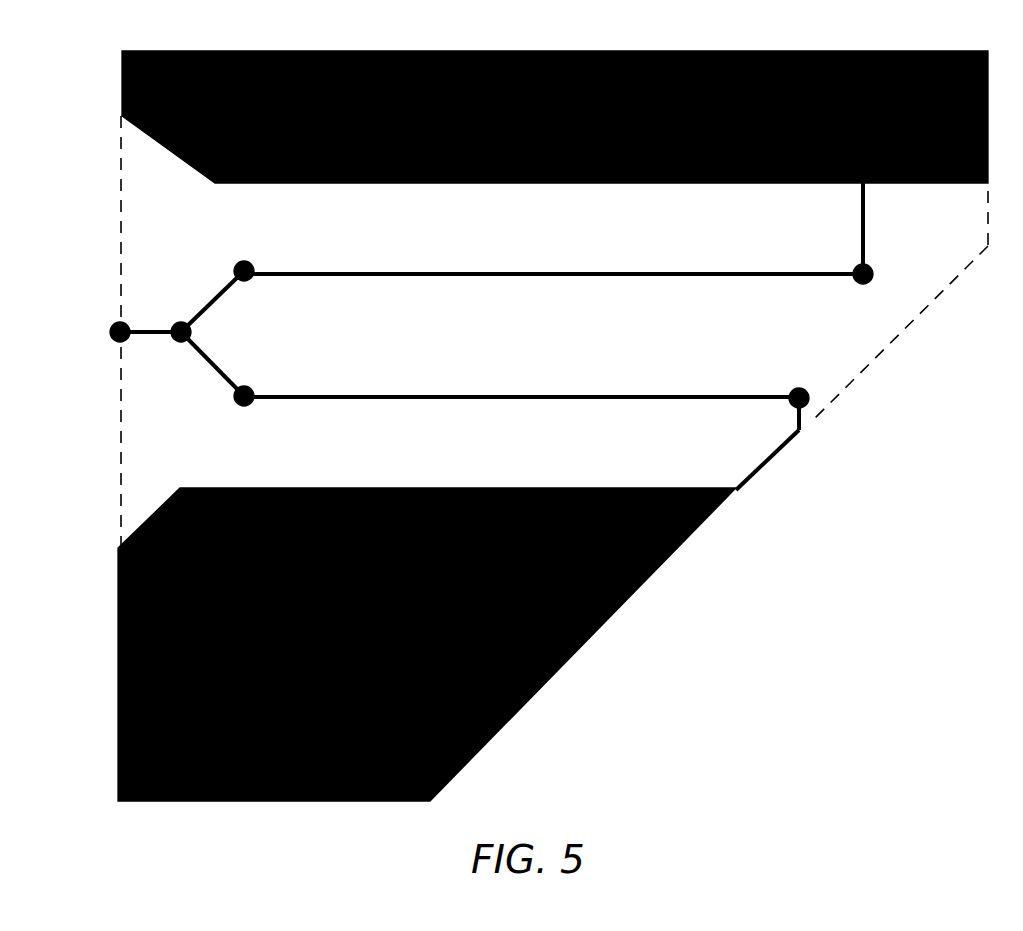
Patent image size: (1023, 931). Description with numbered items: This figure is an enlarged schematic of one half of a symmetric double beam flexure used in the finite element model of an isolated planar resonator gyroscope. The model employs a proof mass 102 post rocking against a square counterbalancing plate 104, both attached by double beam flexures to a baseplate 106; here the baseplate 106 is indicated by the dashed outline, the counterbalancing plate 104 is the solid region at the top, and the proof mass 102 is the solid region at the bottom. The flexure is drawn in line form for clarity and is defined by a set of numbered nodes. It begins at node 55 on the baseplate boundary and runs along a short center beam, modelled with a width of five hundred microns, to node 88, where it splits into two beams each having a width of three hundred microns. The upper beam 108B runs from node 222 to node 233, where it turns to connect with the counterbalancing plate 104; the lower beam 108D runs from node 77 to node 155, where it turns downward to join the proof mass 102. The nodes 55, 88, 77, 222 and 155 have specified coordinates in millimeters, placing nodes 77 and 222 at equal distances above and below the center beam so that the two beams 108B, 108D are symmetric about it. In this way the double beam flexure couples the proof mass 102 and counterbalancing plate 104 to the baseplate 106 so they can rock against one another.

The proof mass 102 is at (587, 626).
The counterbalancing plate 104 is at (745, 45).
The baseplate 106 is at (138, 219).
The double beam flexure beam 108B is at (608, 264).
The double beam flexure beam 108D is at (607, 387).
The node 55 is at (134, 341).
The node 88 is at (207, 333).
The node 222 is at (243, 260).
The node 77 is at (243, 408).
The node 233 is at (860, 246).
The node 155 is at (775, 430).